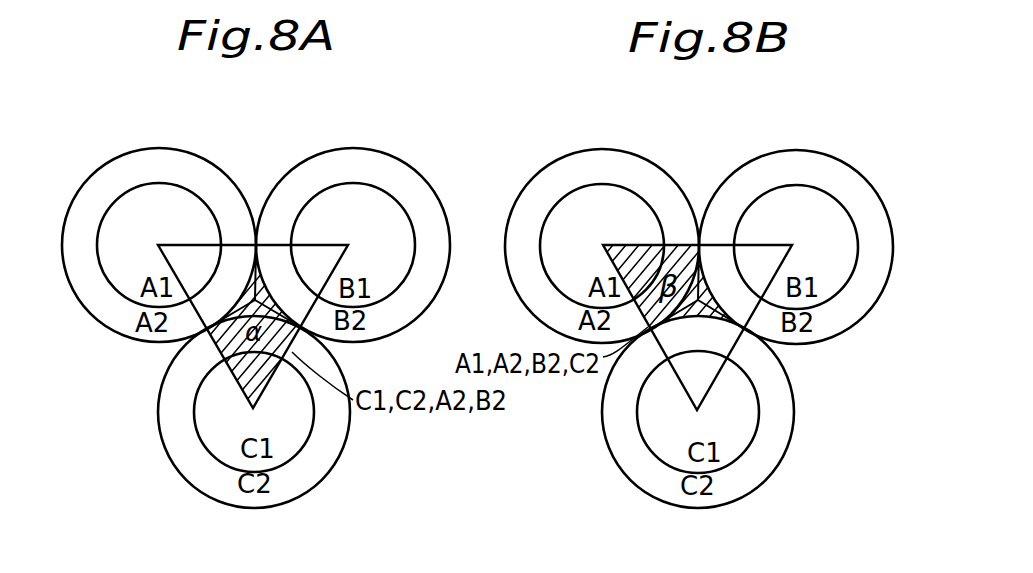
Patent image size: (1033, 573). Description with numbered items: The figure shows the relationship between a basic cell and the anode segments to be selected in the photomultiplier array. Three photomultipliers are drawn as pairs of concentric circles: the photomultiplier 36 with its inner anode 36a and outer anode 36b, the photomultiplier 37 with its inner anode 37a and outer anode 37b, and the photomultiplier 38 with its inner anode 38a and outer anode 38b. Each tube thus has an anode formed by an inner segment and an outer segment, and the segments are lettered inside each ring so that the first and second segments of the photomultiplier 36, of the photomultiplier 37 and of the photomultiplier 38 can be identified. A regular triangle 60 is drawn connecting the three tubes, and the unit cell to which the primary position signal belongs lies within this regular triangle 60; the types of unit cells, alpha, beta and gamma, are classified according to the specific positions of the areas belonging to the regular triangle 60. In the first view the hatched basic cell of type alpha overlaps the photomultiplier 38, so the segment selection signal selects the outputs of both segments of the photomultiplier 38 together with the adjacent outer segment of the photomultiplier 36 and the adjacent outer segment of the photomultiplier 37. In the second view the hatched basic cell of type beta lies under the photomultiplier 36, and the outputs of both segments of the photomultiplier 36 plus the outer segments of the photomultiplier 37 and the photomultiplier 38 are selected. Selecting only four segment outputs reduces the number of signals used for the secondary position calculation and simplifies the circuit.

In FIG. 8A, the photomultiplier 36 is at (151, 220).
In FIG. 8B, the photomultiplier 36 is at (632, 216).
In FIG. 8A, the inner anode 36a is at (128, 223).
In FIG. 8B, the inner anode 36a is at (633, 223).
In FIG. 8A, the outer anode 36b is at (143, 164).
In FIG. 8B, the outer anode 36b is at (588, 167).
In FIG. 8A, the photomultiplier 37 is at (382, 224).
In FIG. 8B, the photomultiplier 37 is at (799, 221).
In FIG. 8A, the inner anode 37a is at (393, 250).
In FIG. 8B, the inner anode 37a is at (835, 262).
In FIG. 8A, the outer anode 37b is at (425, 200).
In FIG. 8B, the outer anode 37b is at (790, 163).
In FIG. 8A, the photomultiplier 38 is at (257, 436).
In FIG. 8B, the photomultiplier 38 is at (714, 415).
In FIG. 8A, the inner anode 38a is at (218, 432).
In FIG. 8B, the inner anode 38a is at (662, 430).
In FIG. 8A, the outer anode 38b is at (297, 478).
In FIG. 8B, the outer anode 38b is at (778, 420).
In FIG. 8A, the regular triangle 60 is at (318, 243).
In FIG. 8B, the regular triangle 60 is at (758, 243).